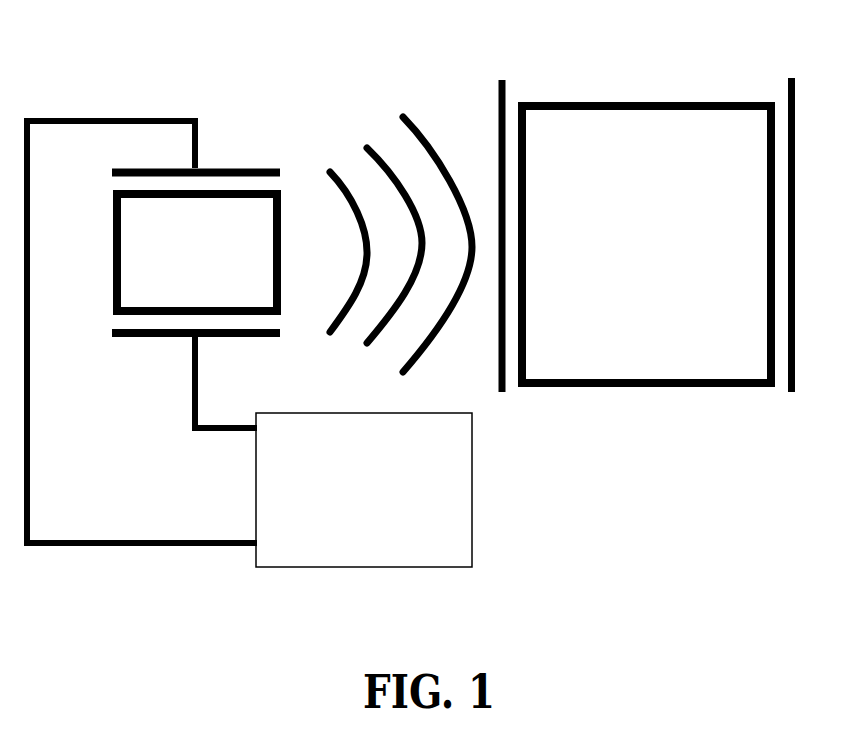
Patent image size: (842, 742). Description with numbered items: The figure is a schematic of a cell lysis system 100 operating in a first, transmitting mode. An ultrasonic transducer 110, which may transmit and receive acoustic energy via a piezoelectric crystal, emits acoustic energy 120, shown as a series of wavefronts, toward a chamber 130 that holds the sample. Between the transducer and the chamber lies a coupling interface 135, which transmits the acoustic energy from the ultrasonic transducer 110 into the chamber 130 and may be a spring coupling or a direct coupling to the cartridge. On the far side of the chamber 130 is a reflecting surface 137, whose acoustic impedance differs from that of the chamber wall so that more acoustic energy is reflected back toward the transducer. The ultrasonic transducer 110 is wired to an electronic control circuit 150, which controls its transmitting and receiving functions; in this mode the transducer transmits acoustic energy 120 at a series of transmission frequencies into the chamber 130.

The cell lysis system 100 is at (565, 480).
The ultrasonic transducer 110 is at (115, 278).
The acoustic energy 120 is at (342, 121).
The chamber 130 is at (627, 387).
The coupling interface 135 is at (498, 100).
The reflecting surface 137 is at (788, 88).
The electronic control circuit 150 is at (472, 555).